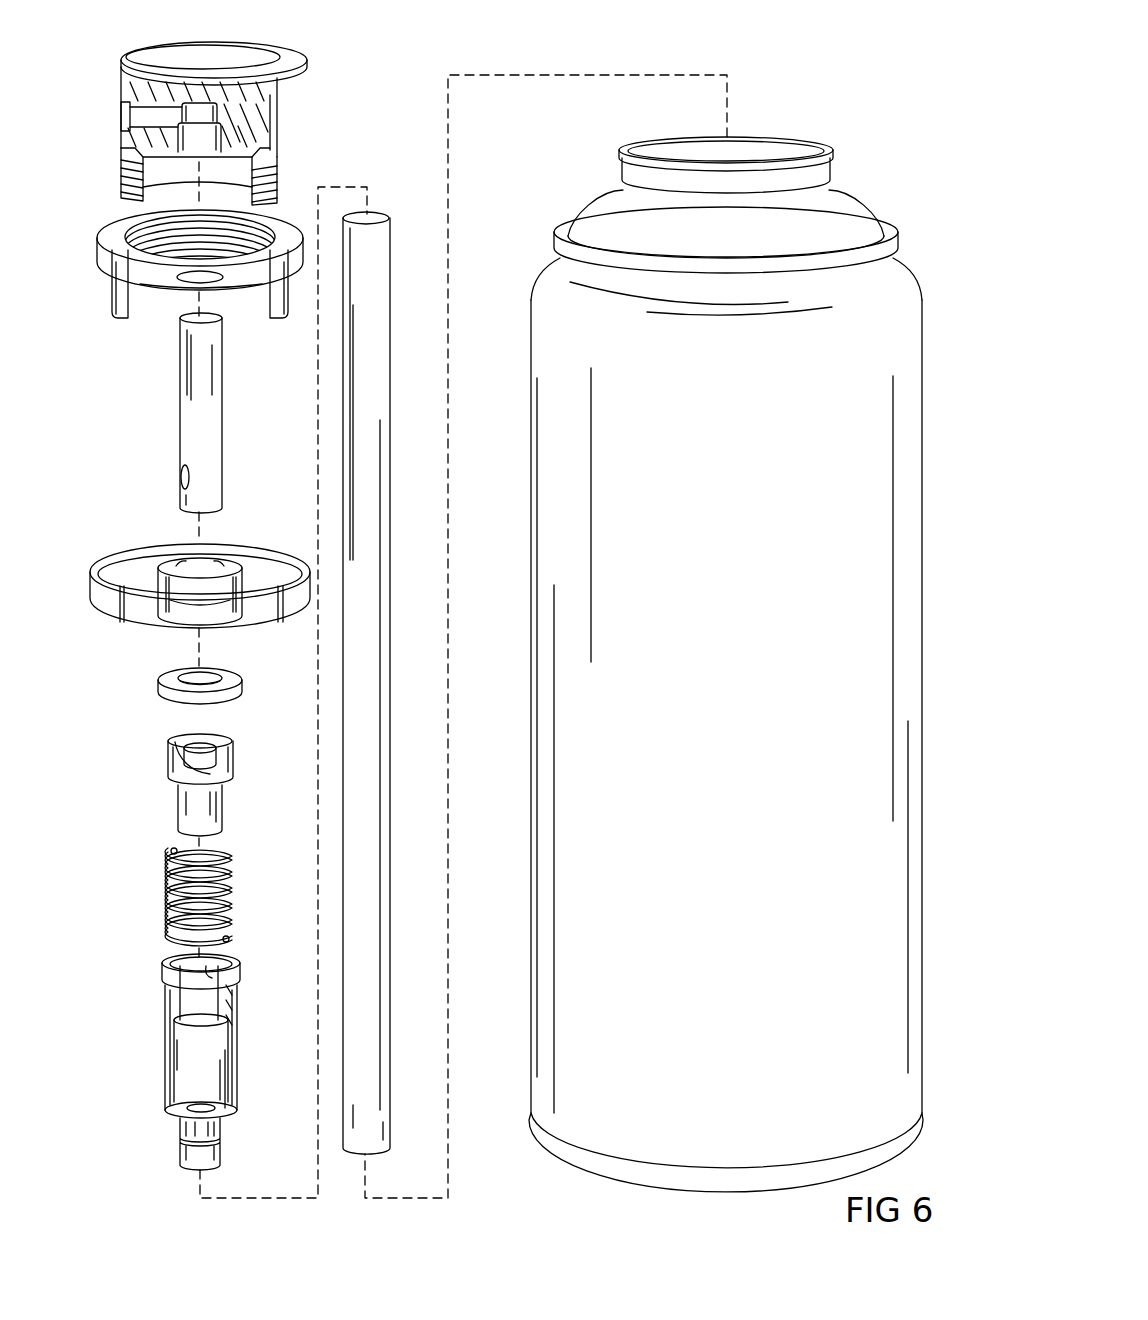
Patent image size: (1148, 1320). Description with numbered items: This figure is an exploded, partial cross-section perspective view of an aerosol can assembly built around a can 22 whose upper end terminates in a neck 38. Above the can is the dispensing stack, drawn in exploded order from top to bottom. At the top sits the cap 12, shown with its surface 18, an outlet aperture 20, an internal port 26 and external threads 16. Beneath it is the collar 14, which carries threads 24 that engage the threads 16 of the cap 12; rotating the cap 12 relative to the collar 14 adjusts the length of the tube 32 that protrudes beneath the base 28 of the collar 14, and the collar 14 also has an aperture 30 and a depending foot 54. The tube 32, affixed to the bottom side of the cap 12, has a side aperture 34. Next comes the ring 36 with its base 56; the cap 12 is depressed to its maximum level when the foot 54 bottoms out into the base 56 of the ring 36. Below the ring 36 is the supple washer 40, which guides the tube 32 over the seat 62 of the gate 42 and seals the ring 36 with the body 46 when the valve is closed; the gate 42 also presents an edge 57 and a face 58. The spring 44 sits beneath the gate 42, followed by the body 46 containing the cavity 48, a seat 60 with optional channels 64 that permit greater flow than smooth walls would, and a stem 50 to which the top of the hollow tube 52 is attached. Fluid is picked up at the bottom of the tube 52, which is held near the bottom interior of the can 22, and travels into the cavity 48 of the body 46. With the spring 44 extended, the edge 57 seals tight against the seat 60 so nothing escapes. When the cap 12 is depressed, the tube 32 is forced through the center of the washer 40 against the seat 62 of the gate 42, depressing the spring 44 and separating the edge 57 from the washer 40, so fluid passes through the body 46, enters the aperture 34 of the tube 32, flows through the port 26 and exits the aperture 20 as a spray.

The cap 12 is at (280, 110).
The surface 18 is at (245, 60).
The port 26 is at (148, 108).
The aperture 20 is at (120, 118).
The threads 16 is at (278, 163).
The collar 14 is at (112, 278).
The threads 24 is at (142, 233).
The base 28 is at (152, 282).
The aperture 30 is at (185, 280).
The foot 54 is at (273, 320).
The tube 32 is at (177, 387).
The aperture 34 is at (177, 480).
The ring 36 is at (98, 607).
The base 56 is at (262, 622).
The washer 40 is at (157, 690).
The gate 42 is at (172, 768).
The edge 57 is at (220, 738).
The face 58 is at (233, 753).
The seat 62 is at (175, 740).
The spring 44 is at (173, 905).
The body 46 is at (164, 1003).
The cavity 48 is at (190, 1055).
The channel 64 is at (208, 972).
The seat 60 is at (222, 1020).
The stem 50 is at (180, 1140).
The tube 52 is at (343, 930).
The can 22 is at (863, 348).
The neck 38 is at (830, 148).